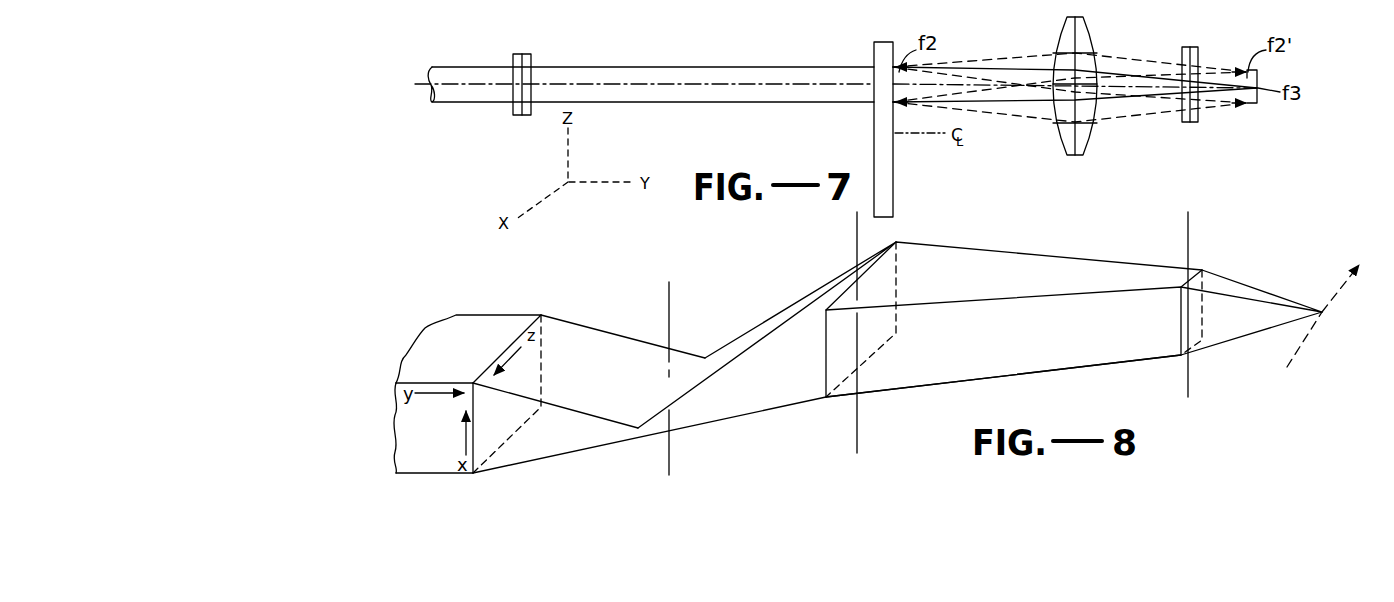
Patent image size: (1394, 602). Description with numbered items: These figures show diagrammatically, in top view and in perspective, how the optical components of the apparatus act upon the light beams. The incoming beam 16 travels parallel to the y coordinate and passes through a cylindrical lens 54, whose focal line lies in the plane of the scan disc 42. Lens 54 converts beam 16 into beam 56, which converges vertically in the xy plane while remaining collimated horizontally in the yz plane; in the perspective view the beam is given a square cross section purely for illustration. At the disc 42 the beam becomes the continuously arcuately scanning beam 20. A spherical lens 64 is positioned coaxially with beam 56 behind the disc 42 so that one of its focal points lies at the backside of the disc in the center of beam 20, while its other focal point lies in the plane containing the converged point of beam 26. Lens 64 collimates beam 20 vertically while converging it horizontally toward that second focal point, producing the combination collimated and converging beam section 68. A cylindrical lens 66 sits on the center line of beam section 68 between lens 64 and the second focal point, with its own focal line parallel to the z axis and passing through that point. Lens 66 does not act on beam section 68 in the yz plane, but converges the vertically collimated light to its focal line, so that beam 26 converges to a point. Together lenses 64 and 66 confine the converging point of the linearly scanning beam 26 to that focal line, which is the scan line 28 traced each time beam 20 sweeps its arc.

In FIG. 7, the beam 16 is at (465, 70).
In FIG. 8, the beam 16 is at (484, 323).
In FIG. 7, the cylindrical lens 54 is at (517, 118).
In FIG. 7, the beam 56 is at (673, 70).
In FIG. 8, the beam 56 is at (630, 350).
In FIG. 7, the disc 42 is at (896, 181).
In FIG. 7, the beam section 68 is at (1115, 78).
In FIG. 8, the beam section 68 is at (1068, 231).
In FIG. 7, the spherical lens 64 is at (1087, 142).
In FIG. 7, the cylindrical lens 66 is at (1193, 124).
In FIG. 7, the continuously linearly scanning beam of light 26 is at (1215, 84).
In FIG. 8, the continuously linearly scanning beam of light 26 is at (1245, 292).
In FIG. 8, the continuously arcuately scanning beam of light 20 is at (752, 400).
In FIG. 8, the scan line 28 is at (1343, 288).